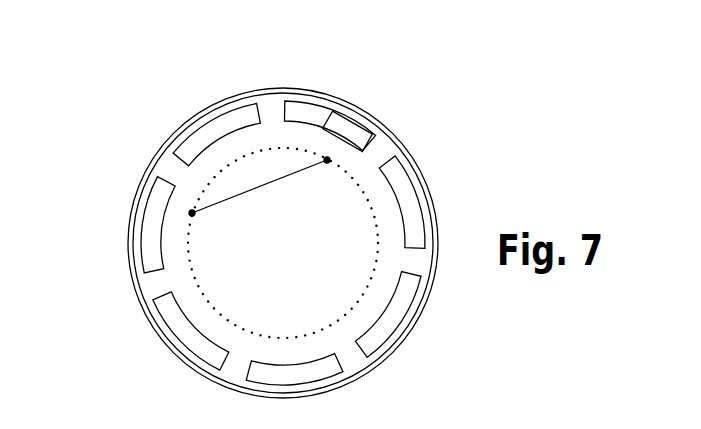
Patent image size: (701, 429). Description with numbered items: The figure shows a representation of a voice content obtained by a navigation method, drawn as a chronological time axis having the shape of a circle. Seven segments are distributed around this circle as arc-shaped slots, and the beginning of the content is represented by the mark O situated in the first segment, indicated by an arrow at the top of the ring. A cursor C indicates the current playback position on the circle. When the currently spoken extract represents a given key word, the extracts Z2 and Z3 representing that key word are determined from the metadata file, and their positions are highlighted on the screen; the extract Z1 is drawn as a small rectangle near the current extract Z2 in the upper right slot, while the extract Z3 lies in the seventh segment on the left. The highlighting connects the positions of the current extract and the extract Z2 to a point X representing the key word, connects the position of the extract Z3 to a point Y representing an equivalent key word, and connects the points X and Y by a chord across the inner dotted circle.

The mark O is at (282, 89).
The cursor C is at (283, 229).
The first zone Z1 is at (346, 113).
The extract Z2 is at (333, 112).
The extract Z3 is at (188, 210).
The point X is at (327, 163).
The point Y is at (192, 216).